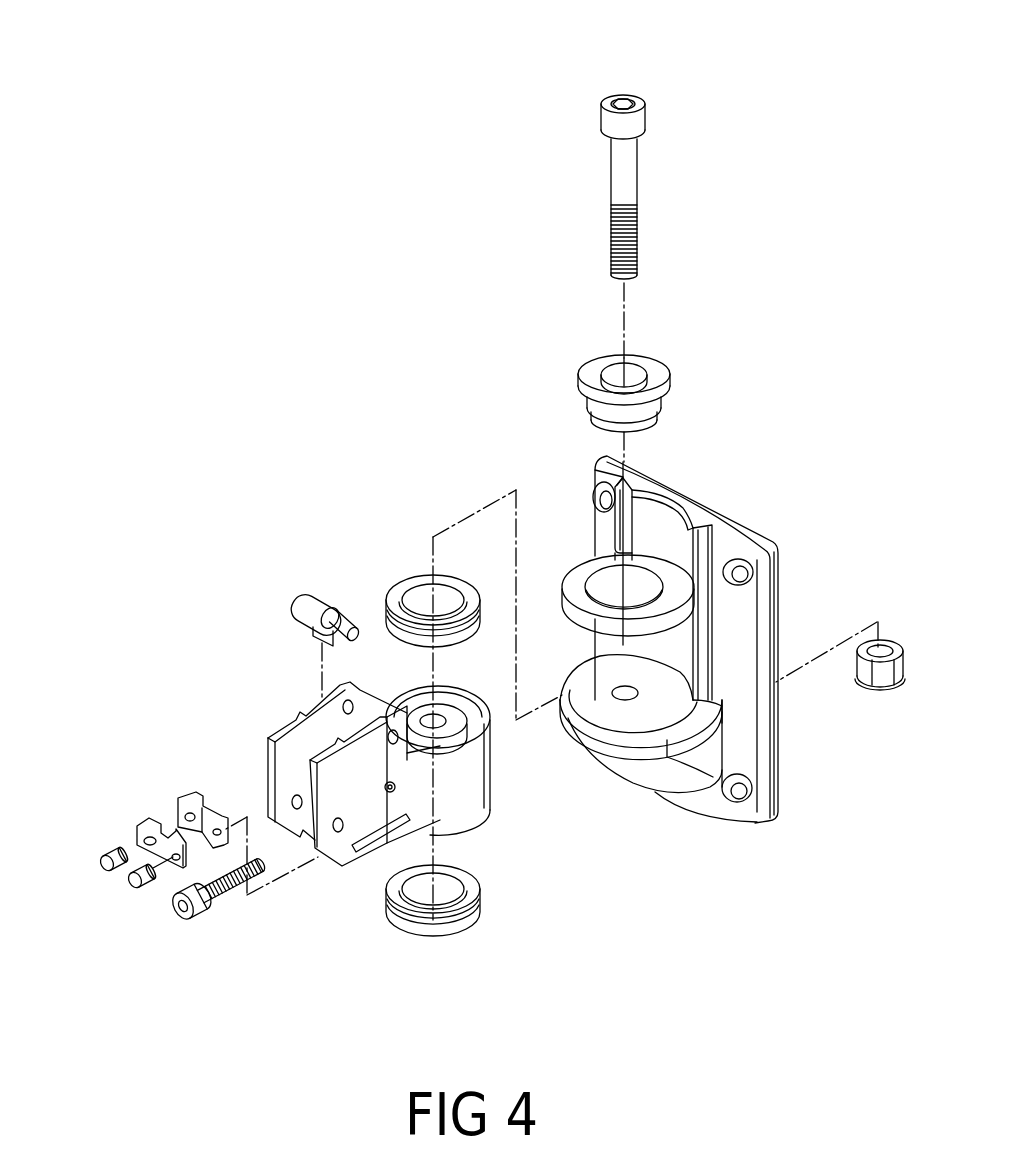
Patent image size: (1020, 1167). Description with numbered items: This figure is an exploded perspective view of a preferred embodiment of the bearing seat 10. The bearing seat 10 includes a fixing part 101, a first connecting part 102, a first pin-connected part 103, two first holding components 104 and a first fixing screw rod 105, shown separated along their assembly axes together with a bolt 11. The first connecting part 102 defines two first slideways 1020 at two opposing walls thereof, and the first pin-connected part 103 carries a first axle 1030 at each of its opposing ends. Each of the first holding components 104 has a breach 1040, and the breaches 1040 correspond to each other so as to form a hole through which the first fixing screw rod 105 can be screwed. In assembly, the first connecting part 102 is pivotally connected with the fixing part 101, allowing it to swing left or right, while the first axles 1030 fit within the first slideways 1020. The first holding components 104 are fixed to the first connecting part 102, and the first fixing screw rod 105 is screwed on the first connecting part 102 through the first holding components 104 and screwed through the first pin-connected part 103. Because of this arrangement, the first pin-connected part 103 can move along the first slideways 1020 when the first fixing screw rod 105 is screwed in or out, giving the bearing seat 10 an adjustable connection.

The bearing seat 10 is at (718, 433).
The bolt 11 is at (628, 96).
The fixing part 101 is at (772, 590).
The first connecting part 102 is at (455, 800).
The first slideways 1020 is at (366, 835).
The first pin-connected part 103 is at (310, 600).
The first axle 1030 is at (296, 603).
The first holding components 104 is at (138, 824).
The breach 1040 is at (205, 832).
The first fixing screw rod 105 is at (236, 892).